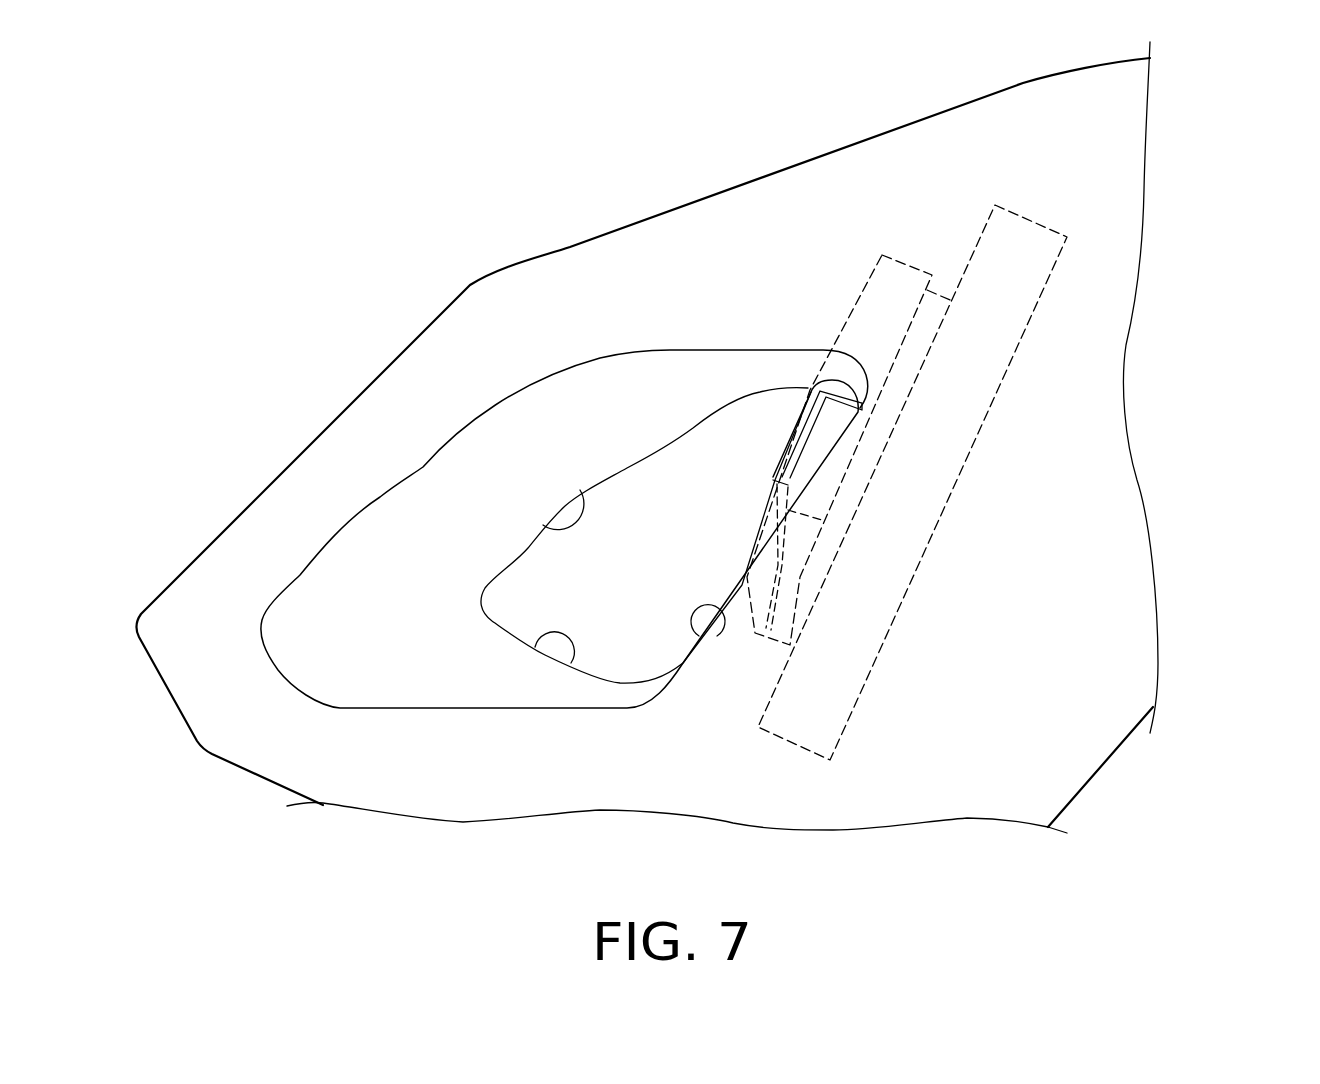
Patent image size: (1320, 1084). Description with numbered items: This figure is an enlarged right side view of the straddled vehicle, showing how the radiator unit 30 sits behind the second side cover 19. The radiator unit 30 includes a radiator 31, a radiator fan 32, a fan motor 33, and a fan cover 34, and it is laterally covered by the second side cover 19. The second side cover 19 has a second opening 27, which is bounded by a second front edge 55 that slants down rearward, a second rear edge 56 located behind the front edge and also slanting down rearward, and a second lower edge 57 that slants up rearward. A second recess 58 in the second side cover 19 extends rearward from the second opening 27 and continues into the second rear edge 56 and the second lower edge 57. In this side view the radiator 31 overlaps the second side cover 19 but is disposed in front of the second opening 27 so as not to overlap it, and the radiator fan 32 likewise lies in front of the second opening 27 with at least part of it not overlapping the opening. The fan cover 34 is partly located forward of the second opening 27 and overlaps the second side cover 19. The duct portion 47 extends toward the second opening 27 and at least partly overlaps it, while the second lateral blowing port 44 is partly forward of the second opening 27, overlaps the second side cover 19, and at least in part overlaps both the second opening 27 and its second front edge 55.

The second side cover 19 is at (443, 350).
The second opening 27 is at (524, 568).
The radiator unit 30 is at (947, 563).
The radiator 31 is at (1013, 363).
The radiator fan 32 is at (902, 378).
The fan motor 33 is at (807, 413).
The fan cover 34 is at (857, 310).
The second lateral blowing port 44 is at (817, 436).
The duct portion 47 is at (807, 381).
The second front edge 55 is at (699, 636).
The second rear edge 56 is at (580, 490).
The second lower edge 57 is at (573, 650).
The second recess 58 is at (380, 597).